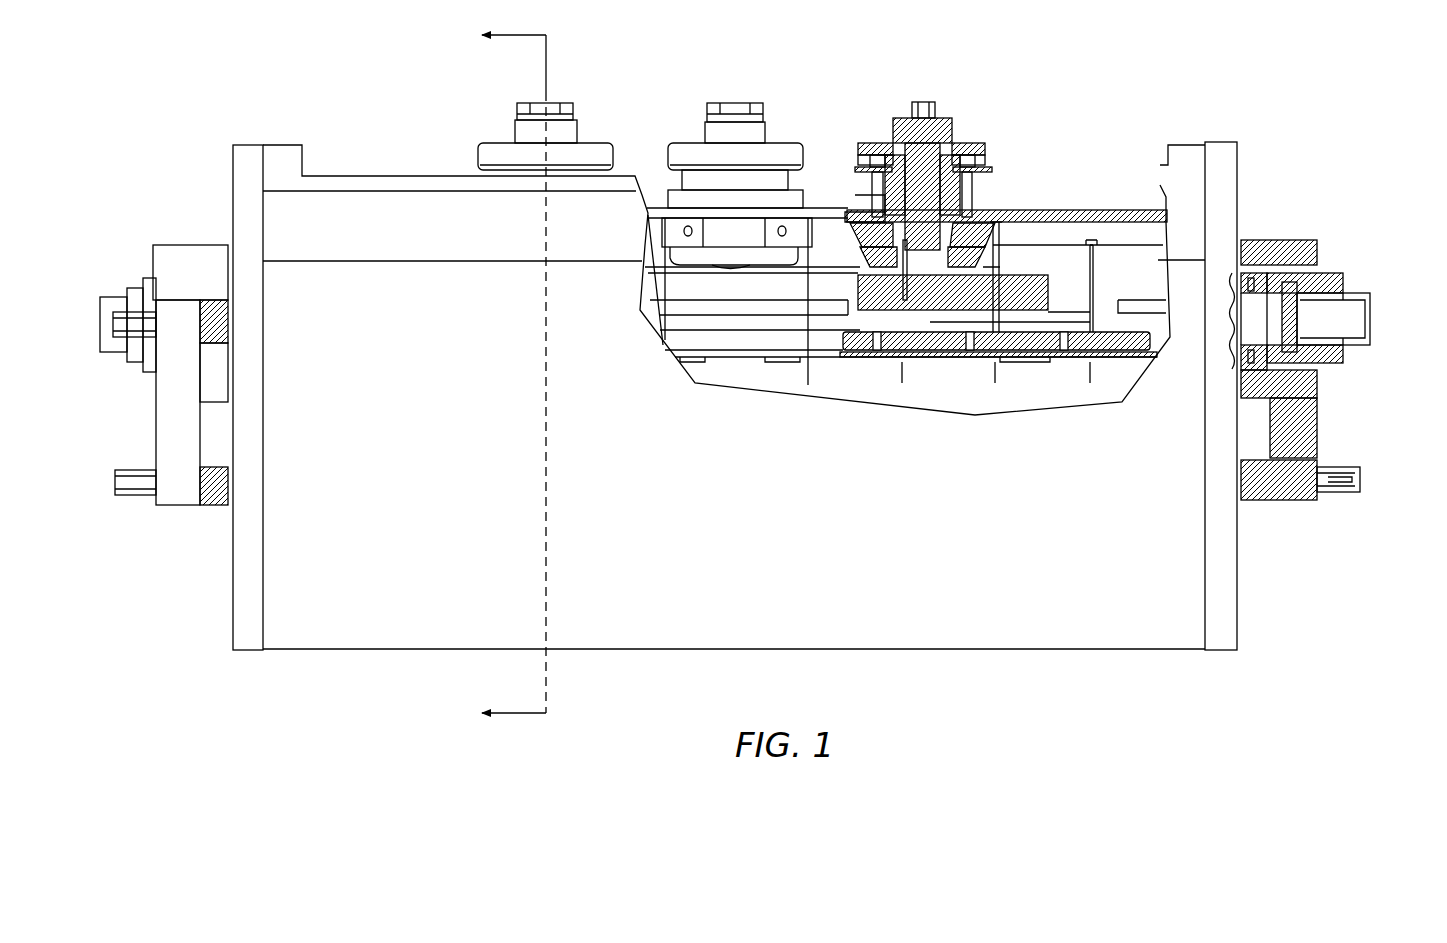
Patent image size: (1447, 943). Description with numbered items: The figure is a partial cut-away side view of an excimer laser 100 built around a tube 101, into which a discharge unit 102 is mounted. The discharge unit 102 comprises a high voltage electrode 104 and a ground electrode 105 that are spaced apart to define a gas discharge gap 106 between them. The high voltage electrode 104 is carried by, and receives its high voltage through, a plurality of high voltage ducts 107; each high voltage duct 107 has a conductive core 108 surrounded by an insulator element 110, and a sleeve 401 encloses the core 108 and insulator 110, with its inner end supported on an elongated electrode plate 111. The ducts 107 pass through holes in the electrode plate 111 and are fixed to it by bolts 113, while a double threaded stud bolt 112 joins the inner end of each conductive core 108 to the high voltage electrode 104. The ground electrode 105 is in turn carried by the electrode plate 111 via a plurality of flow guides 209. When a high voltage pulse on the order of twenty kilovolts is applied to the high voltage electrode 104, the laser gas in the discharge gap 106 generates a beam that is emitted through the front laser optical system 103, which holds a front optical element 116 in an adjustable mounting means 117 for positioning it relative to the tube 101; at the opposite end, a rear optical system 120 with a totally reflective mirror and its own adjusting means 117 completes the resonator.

The excimer laser 100 is at (350, 145).
The tube 101 is at (418, 463).
The discharge unit 102 is at (657, 135).
The laser optical system 103 is at (1352, 282).
The high voltage electrode 104 is at (1027, 322).
The ground electrode 105 is at (1112, 330).
The gas discharge gap 106 is at (1093, 245).
The high voltage duct 107 is at (687, 140).
The conductive core 108 is at (922, 101).
The insulator element 110 is at (860, 205).
The electrode plate 111 is at (1172, 207).
The double threaded stud bolt 112 is at (996, 235).
The bolts 113 is at (873, 185).
The front optical element 116 is at (1300, 314).
The adjustable mounting means 117 is at (156, 440).
The rear optical system 120 is at (190, 245).
The flow guides 209 is at (790, 323).
The sleeve 401 is at (950, 140).